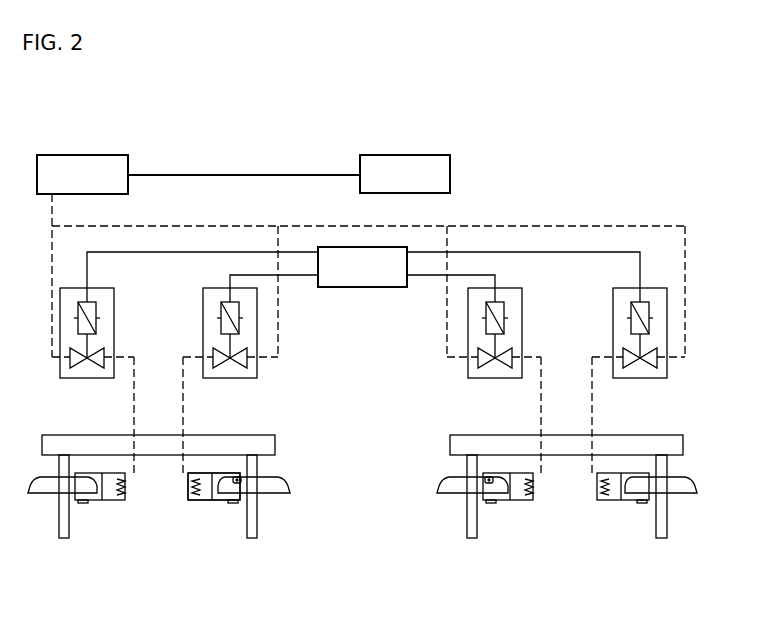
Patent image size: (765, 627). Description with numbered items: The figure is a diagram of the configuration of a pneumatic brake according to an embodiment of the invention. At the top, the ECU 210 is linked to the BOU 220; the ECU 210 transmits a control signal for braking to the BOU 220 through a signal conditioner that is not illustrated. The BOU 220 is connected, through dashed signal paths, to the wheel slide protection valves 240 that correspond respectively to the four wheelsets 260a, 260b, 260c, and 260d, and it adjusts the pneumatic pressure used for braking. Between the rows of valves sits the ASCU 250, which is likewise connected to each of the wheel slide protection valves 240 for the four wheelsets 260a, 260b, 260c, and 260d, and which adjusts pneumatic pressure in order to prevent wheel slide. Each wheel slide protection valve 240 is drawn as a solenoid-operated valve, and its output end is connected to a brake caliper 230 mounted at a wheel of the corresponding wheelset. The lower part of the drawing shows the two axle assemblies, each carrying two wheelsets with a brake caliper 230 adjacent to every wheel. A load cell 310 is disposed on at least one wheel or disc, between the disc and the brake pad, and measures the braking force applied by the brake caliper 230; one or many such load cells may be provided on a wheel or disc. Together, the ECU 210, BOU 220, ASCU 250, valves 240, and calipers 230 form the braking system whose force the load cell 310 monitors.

The ECU (electronic control unit) 210 is at (405, 155).
The BOU (brake operation unit) 220 is at (80, 155).
The brake caliper 230 is at (206, 473).
The wheel slide protection valve 240 is at (114, 333).
The ASCU 250 is at (360, 289).
The wheelset 260a is at (43, 498).
The wheelset 260b is at (276, 500).
The wheelset 260c is at (457, 498).
The wheelset 260d is at (680, 500).
The load cell 310 is at (276, 477).